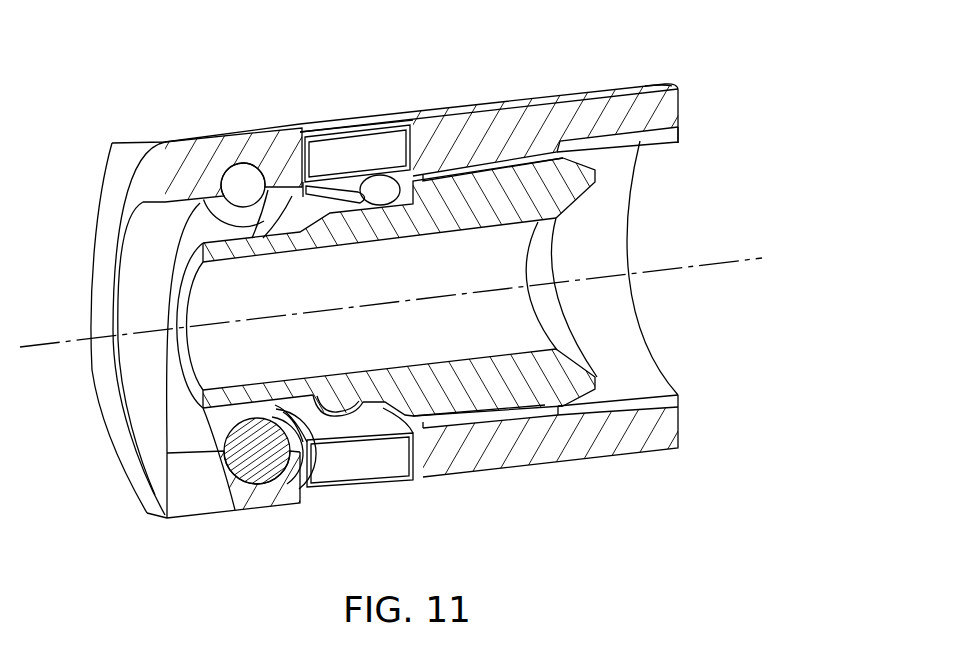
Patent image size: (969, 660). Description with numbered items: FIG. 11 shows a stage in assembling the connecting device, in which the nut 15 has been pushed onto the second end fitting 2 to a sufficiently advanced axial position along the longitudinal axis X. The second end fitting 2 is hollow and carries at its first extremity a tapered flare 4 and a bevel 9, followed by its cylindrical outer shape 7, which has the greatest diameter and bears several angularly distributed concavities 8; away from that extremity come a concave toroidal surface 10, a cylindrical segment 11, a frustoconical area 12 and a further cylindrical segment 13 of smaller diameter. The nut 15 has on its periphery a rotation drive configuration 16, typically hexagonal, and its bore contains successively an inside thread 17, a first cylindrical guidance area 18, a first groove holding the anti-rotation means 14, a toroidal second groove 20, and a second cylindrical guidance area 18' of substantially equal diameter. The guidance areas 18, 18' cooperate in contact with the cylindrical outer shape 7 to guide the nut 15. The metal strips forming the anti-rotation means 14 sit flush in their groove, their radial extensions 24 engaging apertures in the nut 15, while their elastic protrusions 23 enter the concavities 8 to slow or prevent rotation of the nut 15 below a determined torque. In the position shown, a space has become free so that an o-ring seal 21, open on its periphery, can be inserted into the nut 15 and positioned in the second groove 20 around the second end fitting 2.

The second end fitting 2 is at (538, 175).
The tapered flare 4 is at (562, 250).
The cylindrical outer shape 7 is at (562, 421).
The concavities 8 is at (478, 158).
The bevel 9 is at (591, 152).
The concave toroidal surface 10 is at (397, 430).
The cylindrical segment 11 is at (367, 408).
The frustoconical area 12 is at (323, 455).
The cylindrical segment 13 is at (223, 448).
The anti-rotation means 14 is at (300, 207).
The nut 15 is at (657, 105).
The rotation drive configuration 16 is at (139, 131).
The inside thread 17 is at (670, 141).
The first cylindrical guidance area 18 is at (612, 349).
The second cylindrical guidance area 18' is at (95, 328).
The second groove 20 is at (281, 130).
The o-ring seal 21 is at (240, 178).
The protrusions 23 is at (337, 187).
The radial extensions 24 is at (387, 143).
The longitudinal axis X is at (738, 262).